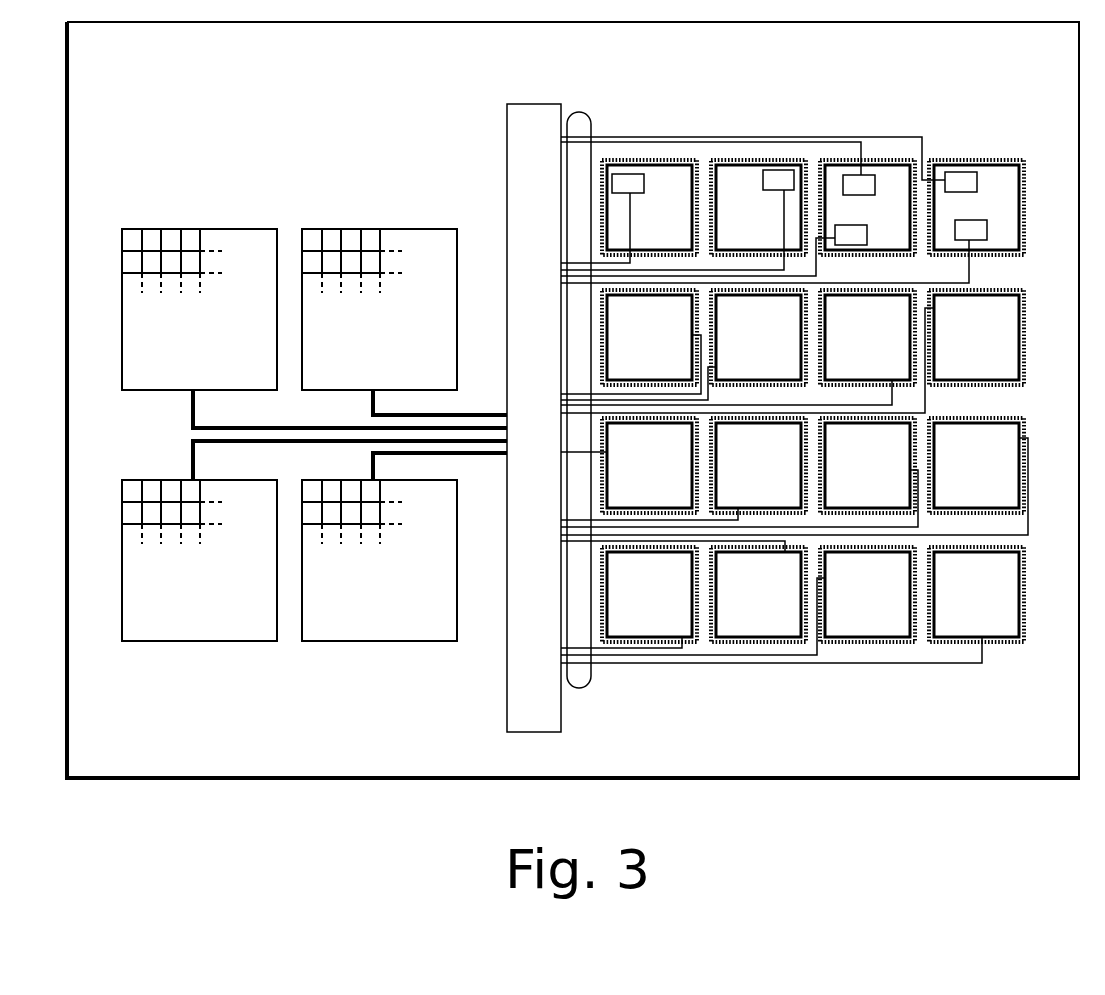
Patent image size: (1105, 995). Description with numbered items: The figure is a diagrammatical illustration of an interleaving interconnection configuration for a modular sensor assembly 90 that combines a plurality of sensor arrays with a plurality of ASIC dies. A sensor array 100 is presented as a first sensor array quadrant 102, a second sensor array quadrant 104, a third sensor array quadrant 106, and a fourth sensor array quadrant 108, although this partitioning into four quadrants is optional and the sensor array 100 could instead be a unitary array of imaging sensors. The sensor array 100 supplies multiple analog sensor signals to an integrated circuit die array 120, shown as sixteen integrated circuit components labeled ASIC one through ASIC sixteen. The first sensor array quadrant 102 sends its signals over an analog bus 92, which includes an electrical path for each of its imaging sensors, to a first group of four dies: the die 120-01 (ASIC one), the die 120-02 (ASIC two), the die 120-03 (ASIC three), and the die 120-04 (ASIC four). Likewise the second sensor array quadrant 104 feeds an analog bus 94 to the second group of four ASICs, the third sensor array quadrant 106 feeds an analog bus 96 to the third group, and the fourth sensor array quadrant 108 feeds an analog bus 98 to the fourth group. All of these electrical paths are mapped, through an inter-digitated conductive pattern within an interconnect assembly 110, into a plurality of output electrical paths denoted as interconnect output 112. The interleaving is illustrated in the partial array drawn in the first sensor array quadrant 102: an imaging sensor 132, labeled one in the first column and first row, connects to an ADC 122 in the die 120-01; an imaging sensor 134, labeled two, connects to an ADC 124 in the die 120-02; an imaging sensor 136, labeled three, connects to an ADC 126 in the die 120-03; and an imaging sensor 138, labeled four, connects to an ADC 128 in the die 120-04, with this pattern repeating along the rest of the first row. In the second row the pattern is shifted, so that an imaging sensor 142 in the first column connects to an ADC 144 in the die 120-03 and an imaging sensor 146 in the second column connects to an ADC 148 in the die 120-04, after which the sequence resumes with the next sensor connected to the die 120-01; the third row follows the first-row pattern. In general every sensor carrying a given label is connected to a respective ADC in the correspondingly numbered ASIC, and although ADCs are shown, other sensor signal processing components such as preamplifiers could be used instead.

The modular sensor assembly 90 is at (387, 780).
The analog bus 92 is at (262, 426).
The analog bus 94 is at (462, 413).
The analog bus 96 is at (330, 443).
The analog bus 98 is at (462, 455).
The sensor array 100 is at (276, 116).
The first sensor array quadrant 102 is at (258, 229).
The second sensor array quadrant 104 is at (438, 229).
The third sensor array quadrant 106 is at (168, 642).
The fourth sensor array quadrant 108 is at (346, 642).
The interconnect assembly 110 is at (532, 104).
The interconnect output 112 is at (585, 690).
The integrated circuit die array 120 is at (940, 82).
The die 120-01 is at (672, 177).
The die 120-02 is at (752, 172).
The die 120-03 is at (895, 175).
The die 120-04 is at (985, 183).
The ADC 122 is at (625, 173).
The ADC 124 is at (778, 170).
The ADC 126 is at (860, 250).
The ADC 128 is at (980, 242).
The imaging sensor 132 is at (132, 231).
The imaging sensor 134 is at (153, 231).
The imaging sensor 136 is at (170, 231).
The imaging sensor 138 is at (190, 231).
The imaging sensor 142 is at (122, 269).
The ADC 144 is at (878, 183).
The imaging sensor 146 is at (152, 276).
The ADC 148 is at (962, 172).